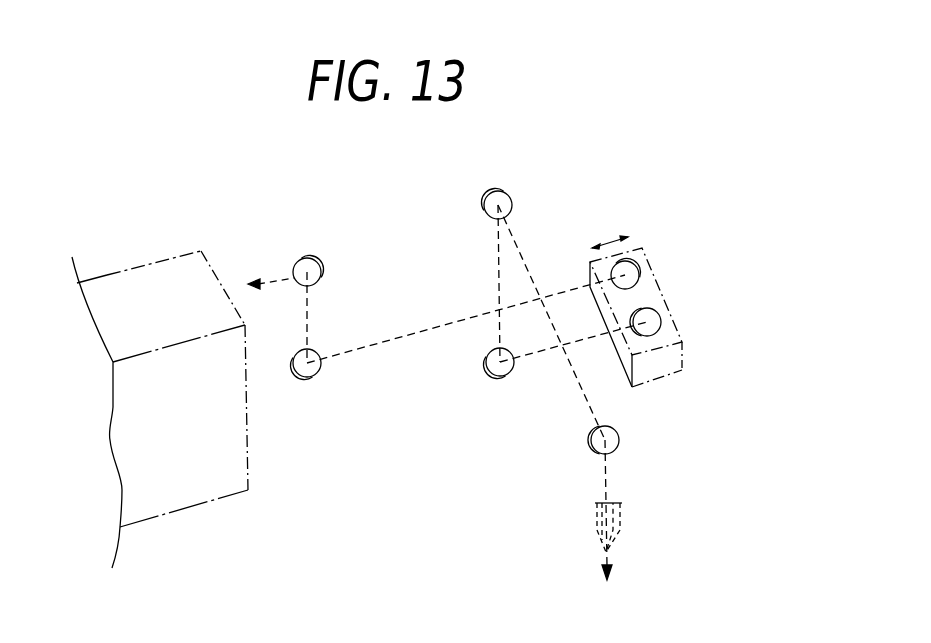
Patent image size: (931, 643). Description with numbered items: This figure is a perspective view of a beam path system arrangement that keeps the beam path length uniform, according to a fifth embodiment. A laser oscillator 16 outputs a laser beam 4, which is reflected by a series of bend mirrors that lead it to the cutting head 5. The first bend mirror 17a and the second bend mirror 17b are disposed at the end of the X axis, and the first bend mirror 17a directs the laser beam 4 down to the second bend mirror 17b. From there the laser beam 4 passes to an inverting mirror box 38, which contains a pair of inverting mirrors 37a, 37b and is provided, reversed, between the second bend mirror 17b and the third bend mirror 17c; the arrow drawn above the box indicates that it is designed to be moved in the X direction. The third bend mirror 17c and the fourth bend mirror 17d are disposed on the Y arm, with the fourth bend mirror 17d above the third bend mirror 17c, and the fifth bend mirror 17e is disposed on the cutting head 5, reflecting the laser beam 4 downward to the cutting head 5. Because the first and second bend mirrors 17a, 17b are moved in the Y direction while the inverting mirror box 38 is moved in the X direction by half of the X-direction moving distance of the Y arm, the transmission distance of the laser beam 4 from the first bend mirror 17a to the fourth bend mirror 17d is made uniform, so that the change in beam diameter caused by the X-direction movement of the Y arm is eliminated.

The laser oscillator 16 is at (107, 272).
The laser beam 4 is at (249, 283).
The cutting head 5 is at (622, 520).
The first bend mirror 17a is at (318, 258).
The second bend mirror 17b is at (302, 378).
The third bend mirror 17c is at (485, 375).
The fourth bend mirror 17d is at (503, 192).
The fifth bend mirror 17e is at (615, 442).
The inverting mirror 37a is at (643, 272).
The inverting mirror 37b is at (660, 318).
The inverting mirror box 38 is at (672, 378).